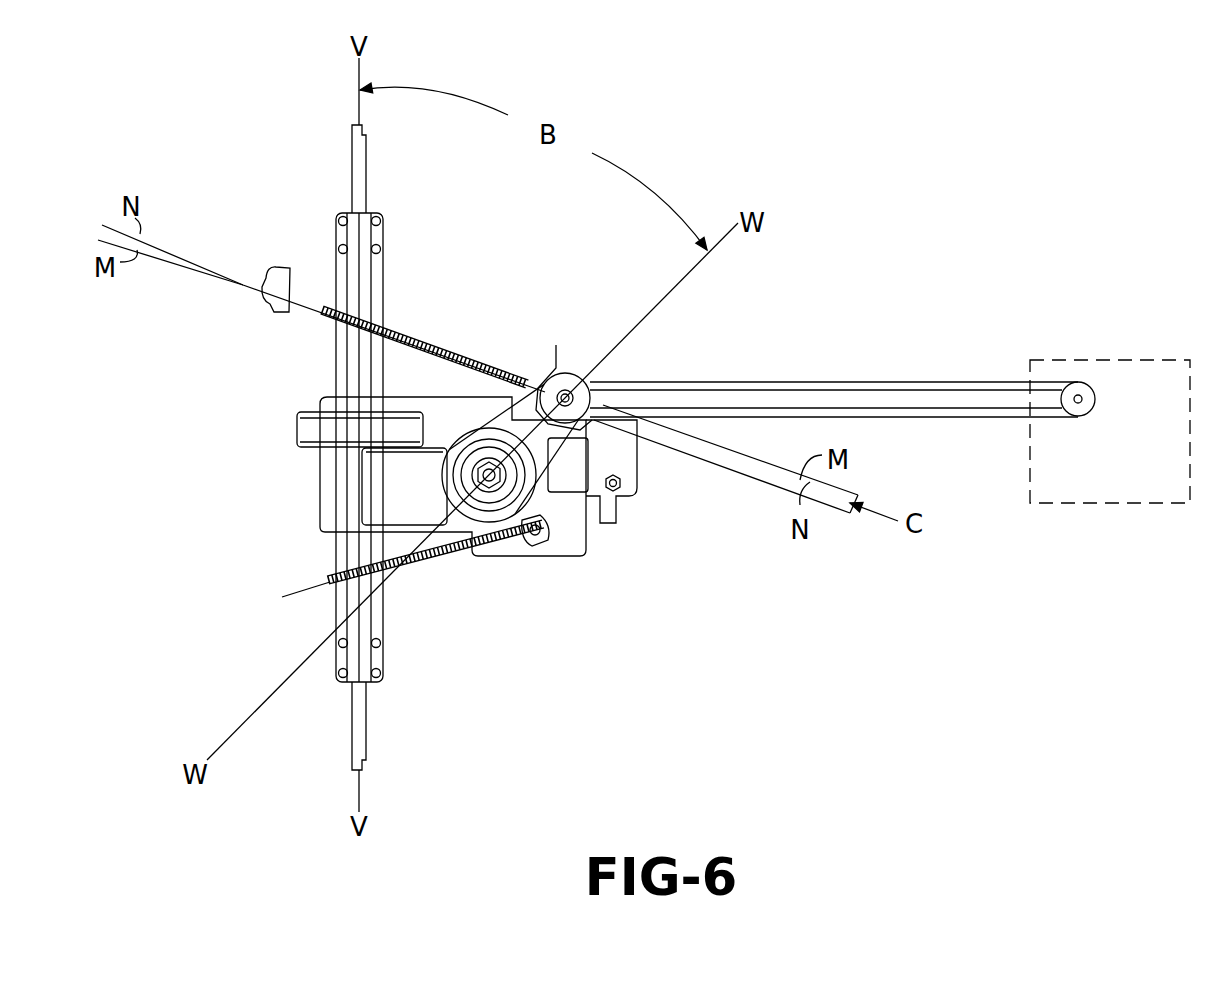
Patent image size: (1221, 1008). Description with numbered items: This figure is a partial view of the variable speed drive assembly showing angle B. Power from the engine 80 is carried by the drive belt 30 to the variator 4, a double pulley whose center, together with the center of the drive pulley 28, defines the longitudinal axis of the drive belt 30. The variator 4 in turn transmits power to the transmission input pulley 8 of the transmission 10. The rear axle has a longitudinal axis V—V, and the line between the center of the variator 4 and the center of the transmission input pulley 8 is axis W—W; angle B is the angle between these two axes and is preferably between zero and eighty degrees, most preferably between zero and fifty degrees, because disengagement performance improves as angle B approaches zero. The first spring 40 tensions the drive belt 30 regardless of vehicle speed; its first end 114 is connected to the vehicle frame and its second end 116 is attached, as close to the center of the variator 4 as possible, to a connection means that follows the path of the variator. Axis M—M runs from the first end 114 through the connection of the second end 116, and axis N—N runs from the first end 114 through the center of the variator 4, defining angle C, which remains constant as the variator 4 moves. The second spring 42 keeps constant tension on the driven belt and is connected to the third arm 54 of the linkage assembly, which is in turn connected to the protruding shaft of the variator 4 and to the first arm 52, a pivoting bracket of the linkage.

The variator 4 is at (556, 362).
The transmission input pulley 8 is at (525, 510).
The transmission 10 is at (404, 533).
The drive pulley 28 is at (1082, 410).
The drive belt 30 is at (963, 385).
The first spring 40 is at (325, 312).
The second spring 42 is at (336, 575).
The first arm 52 is at (580, 497).
The third arm 54 is at (607, 437).
The engine 80 is at (1123, 360).
The first end 114 is at (285, 270).
The second end 116 is at (545, 360).